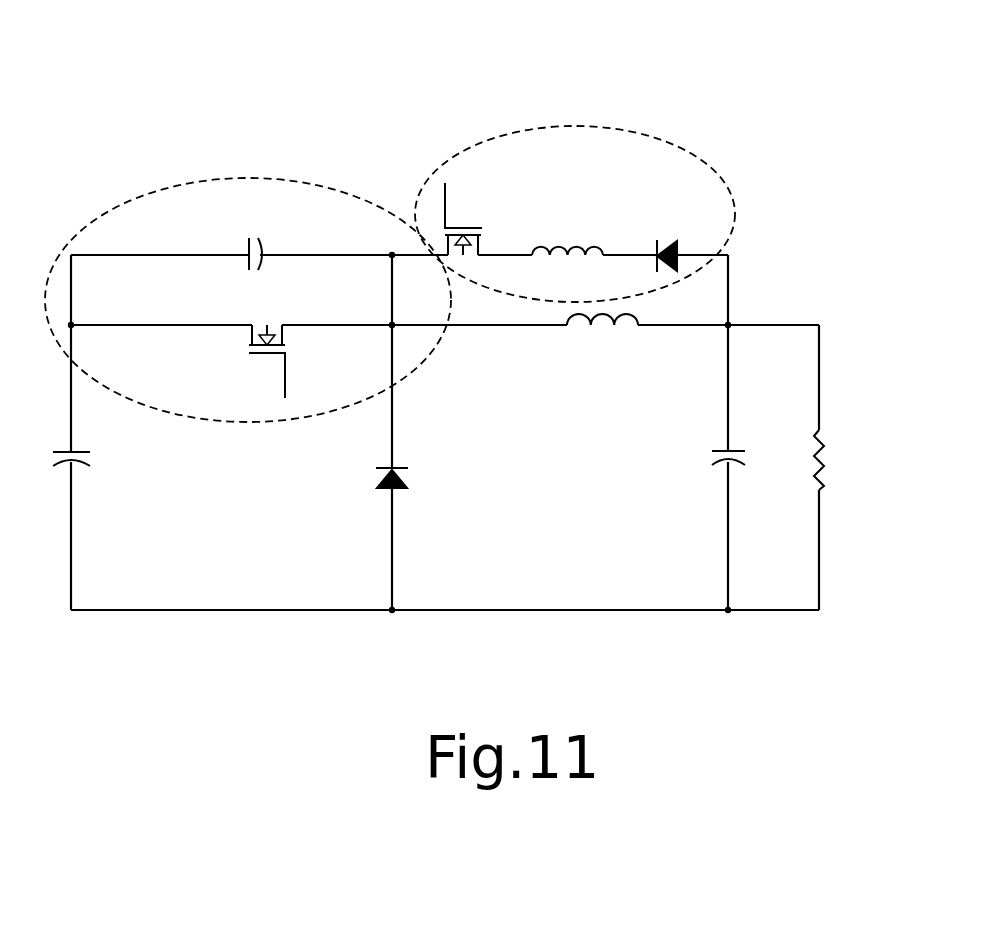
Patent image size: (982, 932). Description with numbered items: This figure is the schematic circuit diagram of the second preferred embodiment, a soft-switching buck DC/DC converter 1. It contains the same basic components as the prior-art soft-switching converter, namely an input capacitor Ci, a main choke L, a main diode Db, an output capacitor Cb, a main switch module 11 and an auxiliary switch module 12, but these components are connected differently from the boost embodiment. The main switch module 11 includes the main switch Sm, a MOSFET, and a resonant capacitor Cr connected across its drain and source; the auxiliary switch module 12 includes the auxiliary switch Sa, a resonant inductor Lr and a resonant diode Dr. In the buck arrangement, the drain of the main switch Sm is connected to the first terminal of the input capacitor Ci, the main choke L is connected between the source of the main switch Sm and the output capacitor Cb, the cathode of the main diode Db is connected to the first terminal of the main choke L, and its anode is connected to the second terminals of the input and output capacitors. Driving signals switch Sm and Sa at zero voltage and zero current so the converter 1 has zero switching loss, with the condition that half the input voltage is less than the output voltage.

The soft-switching buck DC/DC converter 1 is at (833, 202).
The main switch module 11 is at (278, 178).
The auxiliary switch module 12 is at (592, 127).